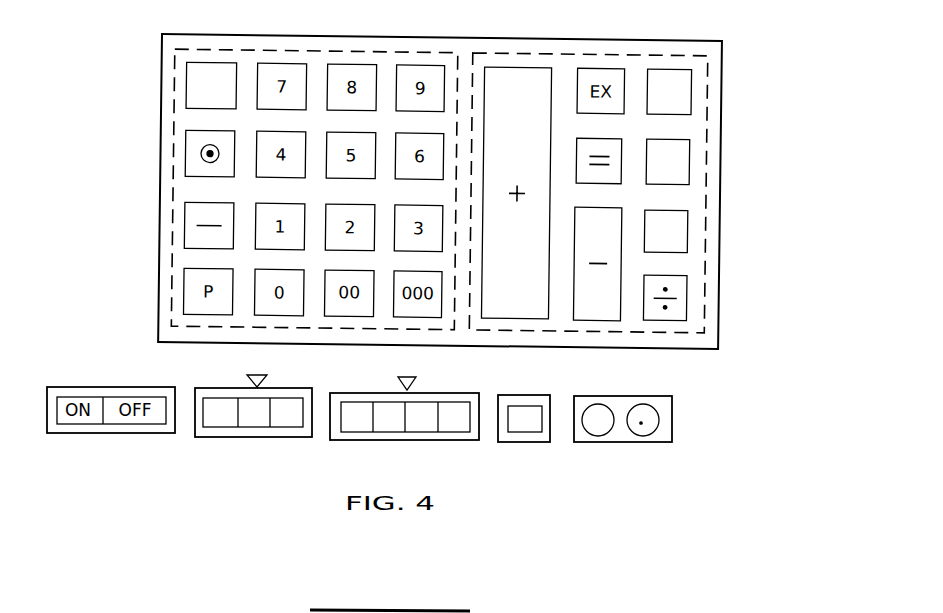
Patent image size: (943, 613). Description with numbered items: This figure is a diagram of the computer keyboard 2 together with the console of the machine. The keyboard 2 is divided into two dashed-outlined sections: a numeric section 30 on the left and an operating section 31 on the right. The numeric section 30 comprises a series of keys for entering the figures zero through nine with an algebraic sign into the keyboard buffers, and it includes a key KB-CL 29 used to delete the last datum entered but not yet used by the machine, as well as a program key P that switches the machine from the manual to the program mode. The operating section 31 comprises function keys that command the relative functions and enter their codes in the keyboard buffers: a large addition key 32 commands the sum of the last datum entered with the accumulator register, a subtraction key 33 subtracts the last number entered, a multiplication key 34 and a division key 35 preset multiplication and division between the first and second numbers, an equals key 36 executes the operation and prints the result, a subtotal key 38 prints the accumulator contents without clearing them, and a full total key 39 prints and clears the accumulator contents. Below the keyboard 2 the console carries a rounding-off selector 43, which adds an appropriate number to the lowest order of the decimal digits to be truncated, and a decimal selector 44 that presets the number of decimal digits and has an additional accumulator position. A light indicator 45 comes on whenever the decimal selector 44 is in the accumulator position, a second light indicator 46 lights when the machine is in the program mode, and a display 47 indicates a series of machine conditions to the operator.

The keyboard 2 is at (233, 343).
The key KB-CL 29 is at (188, 105).
The numeric section 30 is at (176, 143).
The operating section 31 is at (719, 238).
The addition key 32 is at (508, 67).
The subtraction key 33 is at (600, 317).
The multiplication key 34 is at (677, 250).
The division key 35 is at (688, 305).
The equals key 36 is at (613, 183).
The subtotal key 38 is at (690, 90).
The full total key 39 is at (690, 153).
The rounding-off selector 43 is at (235, 452).
The decimal selector 44 is at (422, 440).
The light indicator 45 is at (647, 436).
The second light indicator 46 is at (632, 498).
The display 47 is at (548, 487).